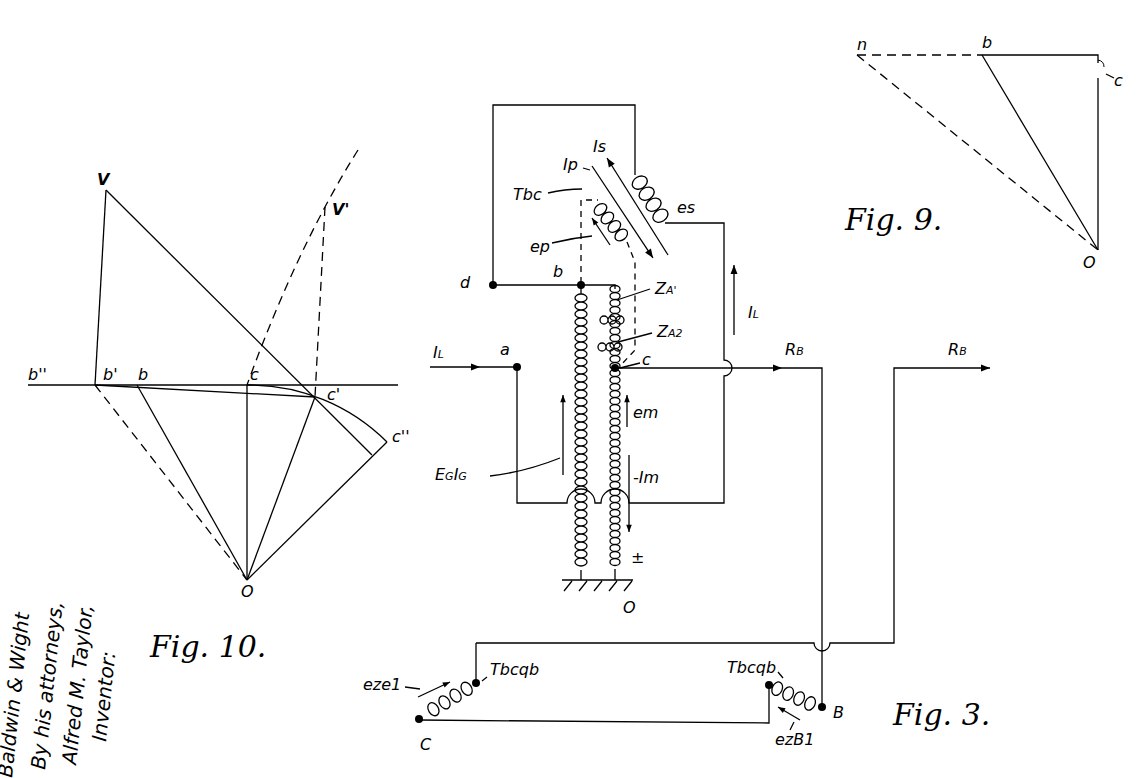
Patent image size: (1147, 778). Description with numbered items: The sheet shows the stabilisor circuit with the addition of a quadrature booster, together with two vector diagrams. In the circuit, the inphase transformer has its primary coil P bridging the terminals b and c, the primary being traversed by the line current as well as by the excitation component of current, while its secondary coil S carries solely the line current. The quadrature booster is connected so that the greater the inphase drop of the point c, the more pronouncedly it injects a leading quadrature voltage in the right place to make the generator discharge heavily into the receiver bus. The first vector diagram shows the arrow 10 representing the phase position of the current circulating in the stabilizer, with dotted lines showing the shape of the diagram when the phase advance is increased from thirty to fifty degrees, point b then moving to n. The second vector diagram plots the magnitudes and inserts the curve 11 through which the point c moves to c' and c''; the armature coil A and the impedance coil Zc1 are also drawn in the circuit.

In FIG. 9, the arrow 10 is at (1102, 53).
In FIG. 10, the locus curve 11 is at (298, 258).
In FIG. 3, the armature coil A is at (620, 448).
In FIG. 3, the primary coil P is at (598, 212).
In FIG. 3, the secondary coil S is at (653, 180).
In FIG. 3, the impedance coil Zc1 is at (463, 707).